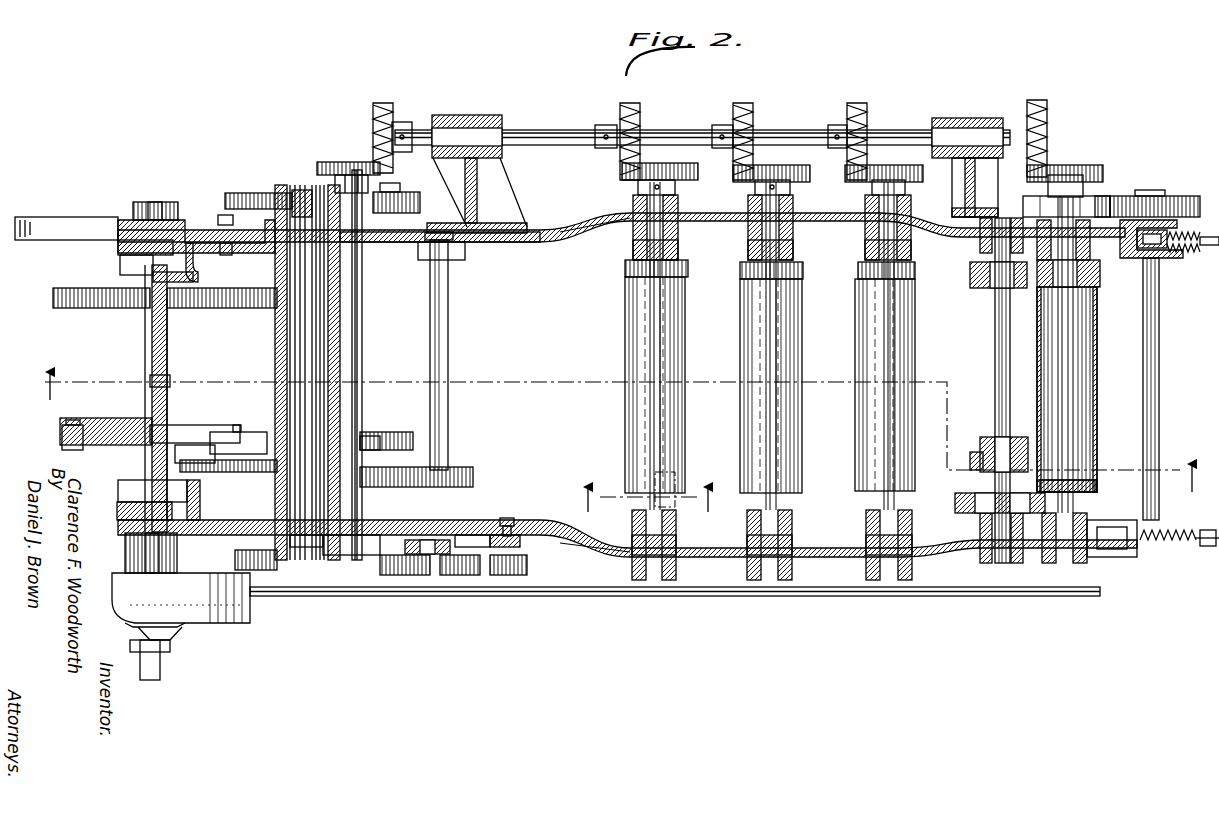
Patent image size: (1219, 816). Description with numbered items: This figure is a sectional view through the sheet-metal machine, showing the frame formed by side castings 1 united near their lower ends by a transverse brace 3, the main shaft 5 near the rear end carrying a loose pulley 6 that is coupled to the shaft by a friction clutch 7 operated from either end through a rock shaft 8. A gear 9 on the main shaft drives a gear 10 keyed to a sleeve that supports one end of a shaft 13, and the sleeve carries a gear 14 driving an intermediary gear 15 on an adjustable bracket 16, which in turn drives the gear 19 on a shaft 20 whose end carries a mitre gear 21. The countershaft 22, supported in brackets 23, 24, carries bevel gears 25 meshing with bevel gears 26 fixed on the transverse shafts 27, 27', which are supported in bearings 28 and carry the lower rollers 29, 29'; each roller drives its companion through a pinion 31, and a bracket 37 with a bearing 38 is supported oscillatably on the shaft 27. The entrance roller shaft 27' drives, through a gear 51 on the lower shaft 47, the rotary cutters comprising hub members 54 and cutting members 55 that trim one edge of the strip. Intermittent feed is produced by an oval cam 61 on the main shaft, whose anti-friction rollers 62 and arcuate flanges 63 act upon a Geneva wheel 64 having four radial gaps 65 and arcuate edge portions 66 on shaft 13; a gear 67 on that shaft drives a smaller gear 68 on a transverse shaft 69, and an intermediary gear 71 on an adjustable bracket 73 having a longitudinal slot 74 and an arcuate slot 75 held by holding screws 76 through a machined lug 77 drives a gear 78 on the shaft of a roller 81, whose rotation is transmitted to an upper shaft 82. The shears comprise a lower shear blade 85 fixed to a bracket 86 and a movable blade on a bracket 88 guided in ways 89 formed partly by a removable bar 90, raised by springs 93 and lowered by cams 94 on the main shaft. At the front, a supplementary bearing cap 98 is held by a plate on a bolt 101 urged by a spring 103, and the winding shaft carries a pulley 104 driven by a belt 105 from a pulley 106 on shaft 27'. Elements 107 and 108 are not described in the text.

The side castings 1 is at (566, 232).
The transverse brace 3 is at (618, 432).
The main shaft 5 is at (143, 351).
The loose pulley 6 is at (250, 620).
The friction clutch 7 is at (192, 628).
The rock shaft 8 is at (358, 596).
The gear 9 is at (118, 308).
The gear 10 is at (268, 310).
The shaft 13 is at (647, 499).
The gear 14 is at (262, 192).
The intermediary gear 15 is at (410, 205).
The bracket 16 is at (398, 242).
The gear 19 is at (298, 193).
The shaft 20 is at (363, 352).
The mitre gear 21 is at (347, 162).
The countershaft 22 is at (545, 130).
The bracket 23 is at (490, 162).
The bracket 24 is at (950, 120).
The bevel gear 25 is at (640, 108).
The bevel gear 26 is at (698, 178).
The shaft 27 is at (772, 346).
The shaft 27' is at (1084, 369).
The bearings 28 is at (633, 195).
The lower roller 29 is at (791, 385).
The roller 29' is at (1084, 389).
The pinion 31 is at (688, 268).
The bracket 37 is at (632, 250).
The bearing 38 is at (640, 244).
The lower shaft 47 is at (995, 335).
The gear 51 is at (958, 496).
The hub members 54 is at (1015, 437).
The cutting members 55 is at (970, 462).
The oval cam 61 is at (197, 425).
The anti-friction rollers 62 is at (62, 435).
The arcuate flanges 63 is at (115, 435).
The Geneva wheel 64 is at (368, 434).
The radial gaps 65 is at (236, 445).
The arcuate edge portions 66 is at (262, 435).
The gear 67 is at (195, 453).
The gear 68 is at (473, 485).
The transverse shaft 69 is at (448, 415).
The intermediary gear 71 is at (425, 548).
The bracket 73 is at (440, 560).
The longitudinal slot 74 is at (455, 555).
The arcuate slot 75 is at (520, 547).
The holding screws 76 is at (510, 518).
The machined lug 77 is at (522, 540).
The gear 78 is at (355, 565).
The roller 81 is at (280, 345).
The upper shaft 82 is at (285, 362).
The lower shear blade 85 is at (152, 360).
The bracket 86 is at (168, 360).
The bracket 88 is at (160, 218).
The ways 89 is at (170, 228).
The removable bar 90 is at (118, 247).
The spring 93 is at (200, 264).
The cams 94 is at (118, 272).
The bearing cap 98 is at (1195, 220).
The bolt 101 is at (1212, 250).
The spring 103 is at (1178, 250).
The pulley 104 is at (1160, 200).
The belt 105 is at (1115, 200).
The pulley 106 is at (1100, 197).
The tube 107 is at (1095, 318).
The bearing 108 is at (1097, 298).